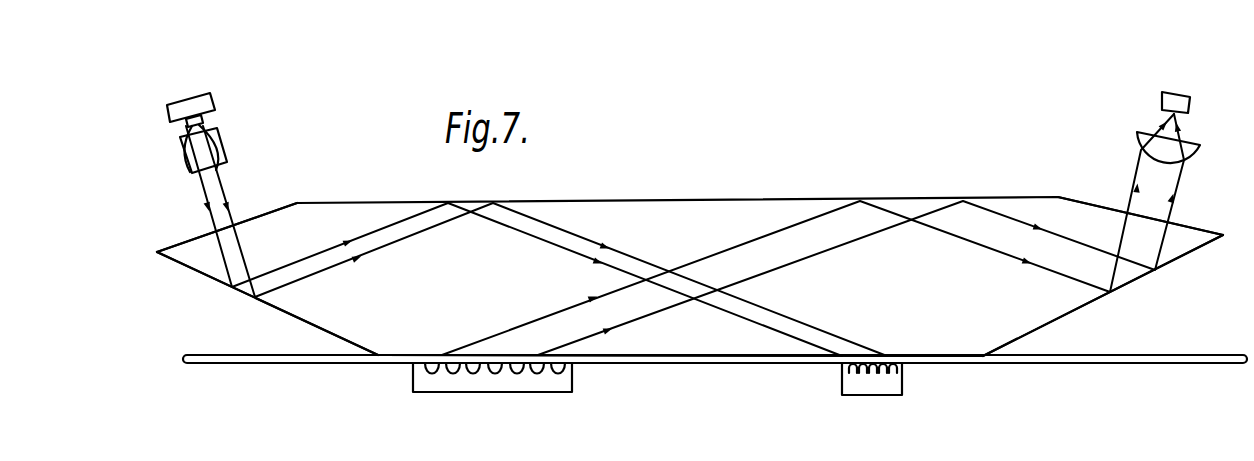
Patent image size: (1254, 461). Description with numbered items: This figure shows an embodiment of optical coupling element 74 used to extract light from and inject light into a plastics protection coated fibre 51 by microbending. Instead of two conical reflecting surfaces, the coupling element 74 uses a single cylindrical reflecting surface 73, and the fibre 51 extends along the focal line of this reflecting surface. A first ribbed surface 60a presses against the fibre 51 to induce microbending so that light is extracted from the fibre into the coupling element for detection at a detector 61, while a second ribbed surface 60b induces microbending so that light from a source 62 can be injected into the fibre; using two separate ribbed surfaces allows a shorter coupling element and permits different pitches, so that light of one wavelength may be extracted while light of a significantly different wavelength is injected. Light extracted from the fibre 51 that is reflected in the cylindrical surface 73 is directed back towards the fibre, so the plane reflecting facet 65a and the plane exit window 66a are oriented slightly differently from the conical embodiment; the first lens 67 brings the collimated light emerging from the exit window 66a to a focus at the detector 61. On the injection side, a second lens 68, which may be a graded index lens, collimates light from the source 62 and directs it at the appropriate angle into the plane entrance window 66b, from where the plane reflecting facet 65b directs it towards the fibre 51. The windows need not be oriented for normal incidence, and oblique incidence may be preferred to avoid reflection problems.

The fibre 51 is at (1090, 365).
The first ribbed surface 60a is at (507, 382).
The second ribbed surface 60b is at (875, 383).
The detector 61 is at (1172, 95).
The source 62 is at (207, 103).
The plane reflecting facet 65a is at (1085, 305).
The plane reflecting facet 65b is at (273, 303).
The plane exit window 66a is at (1188, 225).
The plane entrance window 66b is at (192, 240).
The first lens 67 is at (1200, 149).
The second lens 68 is at (218, 150).
The cylindrical reflecting surface 73 is at (687, 200).
The coupling element 74 is at (698, 359).